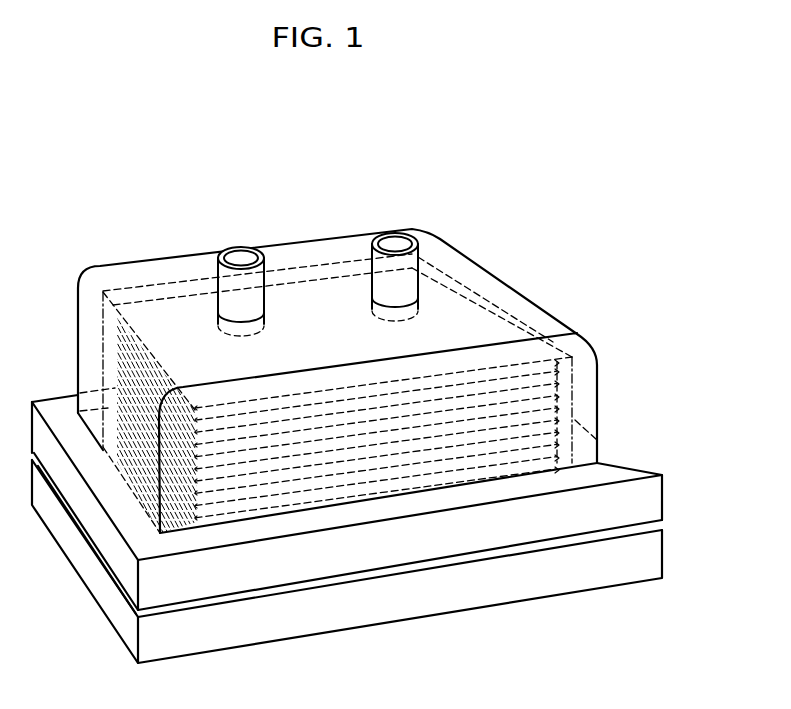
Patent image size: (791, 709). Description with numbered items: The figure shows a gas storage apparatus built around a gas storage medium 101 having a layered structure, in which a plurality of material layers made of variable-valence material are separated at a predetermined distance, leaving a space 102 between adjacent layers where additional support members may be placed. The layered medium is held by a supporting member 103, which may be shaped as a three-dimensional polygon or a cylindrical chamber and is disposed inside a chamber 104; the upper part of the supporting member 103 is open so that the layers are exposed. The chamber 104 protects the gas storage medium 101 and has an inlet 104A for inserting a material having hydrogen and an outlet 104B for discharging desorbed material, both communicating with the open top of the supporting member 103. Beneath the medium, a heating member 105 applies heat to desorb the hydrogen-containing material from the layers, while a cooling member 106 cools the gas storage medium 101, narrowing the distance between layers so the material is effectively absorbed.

The gas storage medium 101 is at (557, 390).
The space 102 is at (562, 407).
The supporting member 103 is at (525, 326).
The chamber 104 is at (507, 285).
The inlet 104A is at (242, 258).
The outlet 104B is at (398, 242).
The heating member 105 is at (653, 501).
The cooling member 106 is at (653, 557).